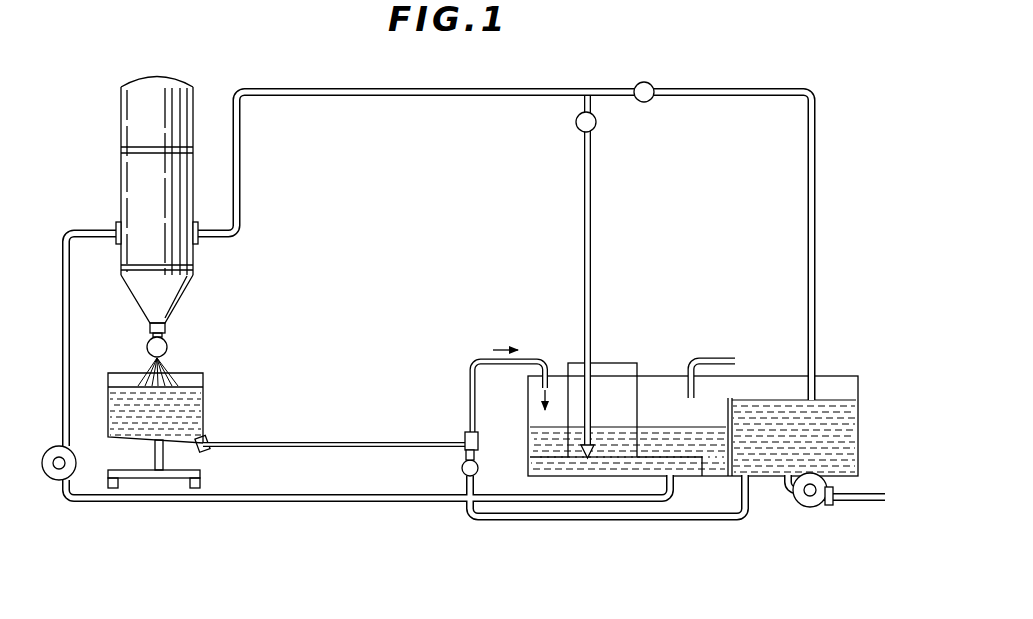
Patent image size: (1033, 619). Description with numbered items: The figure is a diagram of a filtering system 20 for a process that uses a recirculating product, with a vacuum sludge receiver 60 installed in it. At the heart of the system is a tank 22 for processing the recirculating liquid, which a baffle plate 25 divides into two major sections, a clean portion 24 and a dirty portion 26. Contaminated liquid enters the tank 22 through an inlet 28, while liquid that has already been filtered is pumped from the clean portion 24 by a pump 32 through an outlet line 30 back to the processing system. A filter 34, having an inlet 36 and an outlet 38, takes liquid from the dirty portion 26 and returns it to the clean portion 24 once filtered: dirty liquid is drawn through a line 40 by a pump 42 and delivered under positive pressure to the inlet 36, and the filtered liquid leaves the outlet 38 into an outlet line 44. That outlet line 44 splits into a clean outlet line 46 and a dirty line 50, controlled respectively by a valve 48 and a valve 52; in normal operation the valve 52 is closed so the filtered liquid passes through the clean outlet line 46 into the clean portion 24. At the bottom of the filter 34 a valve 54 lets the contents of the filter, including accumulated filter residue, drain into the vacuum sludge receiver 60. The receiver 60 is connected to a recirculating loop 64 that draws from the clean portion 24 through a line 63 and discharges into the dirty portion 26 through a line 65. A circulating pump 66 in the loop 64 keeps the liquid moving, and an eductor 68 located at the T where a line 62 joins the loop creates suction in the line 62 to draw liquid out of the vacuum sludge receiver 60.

The filtering system 20 is at (551, 76).
The tank 22 is at (834, 358).
The clean portion 24 is at (860, 423).
The baffle plate 25 is at (732, 400).
The dirty portion 26 is at (680, 481).
The inlet 28 is at (765, 361).
The outlet line 30 is at (920, 497).
The pump 32 is at (813, 507).
The filter 34 is at (208, 77).
The inlet 36 is at (118, 222).
The outlet 38 is at (197, 222).
The line 40 is at (306, 496).
The pump 42 is at (46, 452).
The outlet line 44 is at (342, 98).
The clean outlet line 46 is at (807, 192).
The valve 48 is at (643, 103).
The dirty line 50 is at (593, 248).
The valve 52 is at (577, 125).
The valve 54 is at (168, 347).
The vacuum sludge receiver 60 is at (212, 398).
The line 62 is at (303, 437).
The line 63 is at (600, 519).
The recirculating loop 64 is at (470, 380).
The line 65 is at (490, 358).
The circulating pump 66 is at (462, 470).
The eductor 68 is at (465, 438).